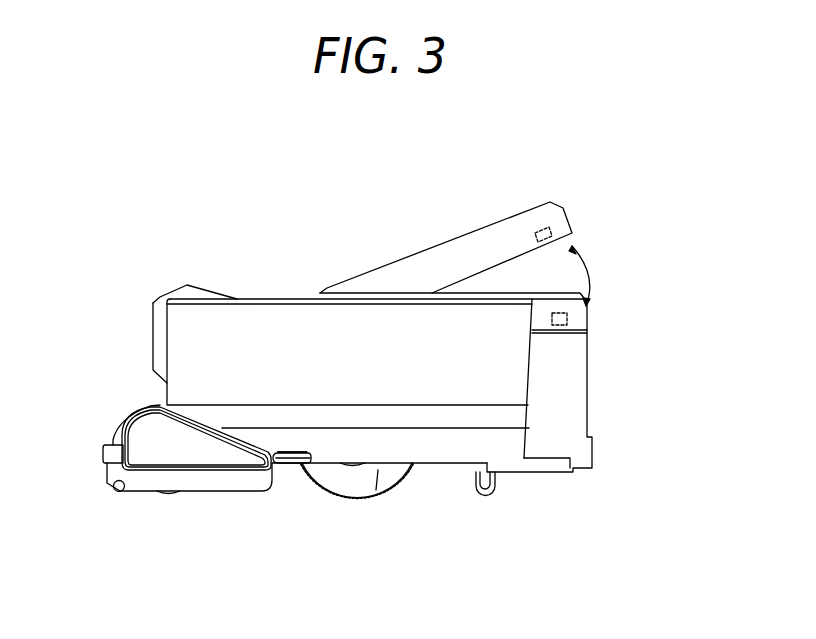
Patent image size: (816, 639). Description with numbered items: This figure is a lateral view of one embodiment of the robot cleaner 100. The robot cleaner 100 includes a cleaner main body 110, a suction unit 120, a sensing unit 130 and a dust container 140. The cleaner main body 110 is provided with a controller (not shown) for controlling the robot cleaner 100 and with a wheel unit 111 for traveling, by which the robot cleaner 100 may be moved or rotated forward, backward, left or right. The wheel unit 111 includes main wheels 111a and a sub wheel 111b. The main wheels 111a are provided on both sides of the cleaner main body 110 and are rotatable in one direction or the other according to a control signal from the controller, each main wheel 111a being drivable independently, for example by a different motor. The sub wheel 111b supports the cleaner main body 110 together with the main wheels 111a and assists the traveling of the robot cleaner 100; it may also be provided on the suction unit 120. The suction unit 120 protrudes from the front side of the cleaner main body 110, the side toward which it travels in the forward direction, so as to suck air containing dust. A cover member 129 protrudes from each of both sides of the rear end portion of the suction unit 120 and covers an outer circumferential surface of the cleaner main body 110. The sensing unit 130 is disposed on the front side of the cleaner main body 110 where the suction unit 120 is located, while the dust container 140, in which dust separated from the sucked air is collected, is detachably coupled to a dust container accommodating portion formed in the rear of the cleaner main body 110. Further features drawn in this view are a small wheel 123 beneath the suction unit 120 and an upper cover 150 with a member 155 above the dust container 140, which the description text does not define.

The robot cleaner 100 is at (188, 204).
The cleaner main body 110 is at (310, 325).
The wheel unit 111 is at (475, 556).
The main wheels 111a is at (377, 478).
The sub wheel 111b is at (483, 492).
The suction unit 120 is at (210, 465).
The auxiliary wheel 123 is at (120, 494).
The cover member 129 is at (295, 467).
The sensing unit 130 is at (178, 283).
The dust container 140 is at (566, 382).
The upper cover (lid) 150 is at (592, 302).
The fastening / sensing member 155 is at (553, 313).